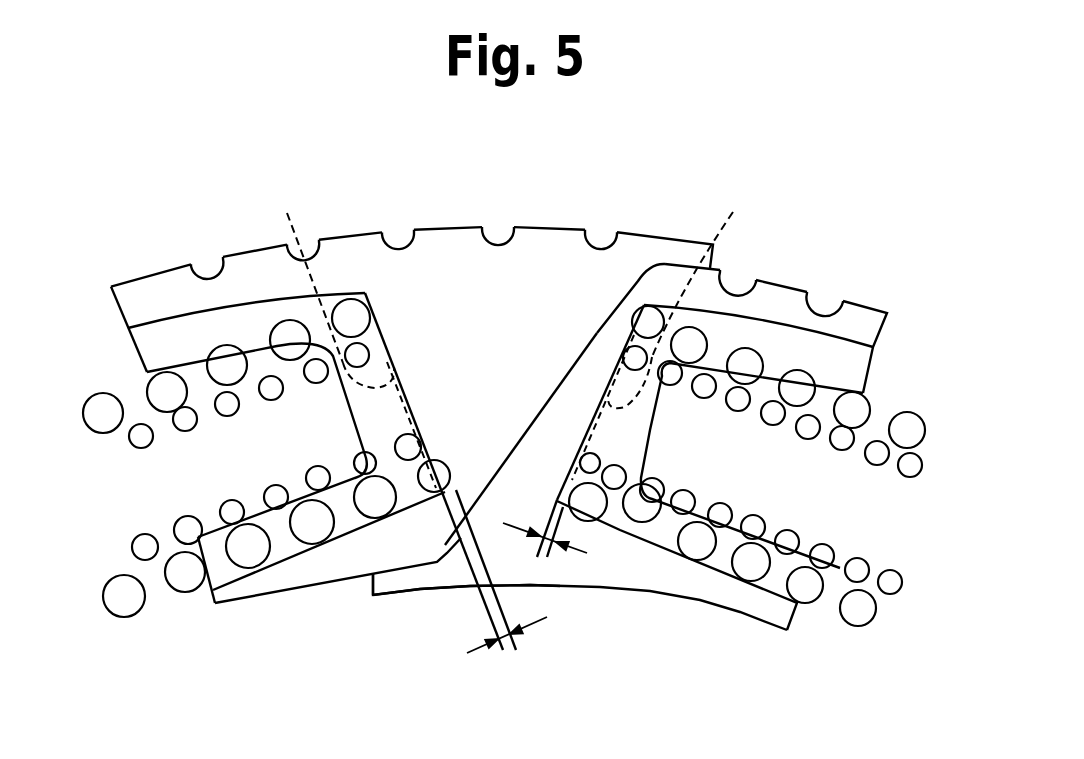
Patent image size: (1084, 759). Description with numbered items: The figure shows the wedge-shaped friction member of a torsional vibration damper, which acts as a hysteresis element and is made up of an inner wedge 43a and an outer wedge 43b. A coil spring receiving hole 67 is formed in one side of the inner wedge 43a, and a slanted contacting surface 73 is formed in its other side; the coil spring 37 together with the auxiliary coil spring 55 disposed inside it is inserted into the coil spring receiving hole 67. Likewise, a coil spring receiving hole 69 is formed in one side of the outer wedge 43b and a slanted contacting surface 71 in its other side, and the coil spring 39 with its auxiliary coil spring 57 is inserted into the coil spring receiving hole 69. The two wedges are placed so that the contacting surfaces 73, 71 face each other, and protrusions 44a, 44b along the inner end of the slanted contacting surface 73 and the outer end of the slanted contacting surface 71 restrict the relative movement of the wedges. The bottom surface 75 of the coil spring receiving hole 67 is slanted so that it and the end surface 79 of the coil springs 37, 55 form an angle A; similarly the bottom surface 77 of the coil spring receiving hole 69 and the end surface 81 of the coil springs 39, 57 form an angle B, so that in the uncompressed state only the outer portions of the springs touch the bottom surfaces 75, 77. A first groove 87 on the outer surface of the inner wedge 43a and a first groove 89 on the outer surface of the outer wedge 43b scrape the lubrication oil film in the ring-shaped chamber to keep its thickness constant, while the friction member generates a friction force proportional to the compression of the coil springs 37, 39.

The coil spring 37 is at (915, 413).
The coil spring 39 is at (101, 394).
The inner wedge 43a is at (670, 597).
The outer wedge 43b is at (337, 567).
The protrusion 44a is at (403, 585).
The protrusion 44b is at (680, 243).
The auxiliary coil spring 55 is at (914, 477).
The auxiliary coil spring 57 is at (141, 449).
The coil spring receiving hole 67 is at (753, 475).
The coil spring receiving hole 69 is at (297, 457).
The slanted contacting surface 71 is at (523, 452).
The slanted contacting surface 73 is at (597, 333).
The bottom surface 75 is at (611, 383).
The bottom surface 77 is at (410, 364).
The end surface 79 is at (673, 332).
The end surface 81 is at (298, 270).
The first groove 87 is at (830, 300).
The first groove 89 is at (204, 267).
The angle A is at (546, 546).
The angle B is at (507, 649).